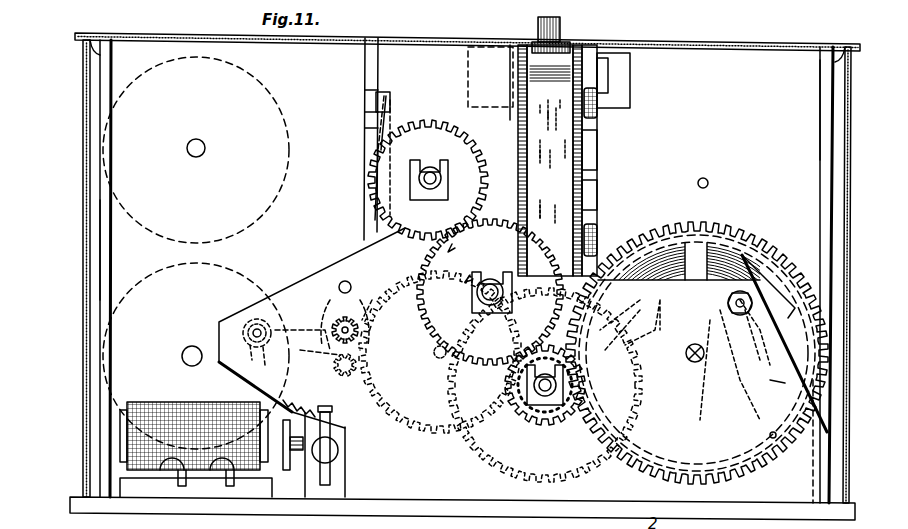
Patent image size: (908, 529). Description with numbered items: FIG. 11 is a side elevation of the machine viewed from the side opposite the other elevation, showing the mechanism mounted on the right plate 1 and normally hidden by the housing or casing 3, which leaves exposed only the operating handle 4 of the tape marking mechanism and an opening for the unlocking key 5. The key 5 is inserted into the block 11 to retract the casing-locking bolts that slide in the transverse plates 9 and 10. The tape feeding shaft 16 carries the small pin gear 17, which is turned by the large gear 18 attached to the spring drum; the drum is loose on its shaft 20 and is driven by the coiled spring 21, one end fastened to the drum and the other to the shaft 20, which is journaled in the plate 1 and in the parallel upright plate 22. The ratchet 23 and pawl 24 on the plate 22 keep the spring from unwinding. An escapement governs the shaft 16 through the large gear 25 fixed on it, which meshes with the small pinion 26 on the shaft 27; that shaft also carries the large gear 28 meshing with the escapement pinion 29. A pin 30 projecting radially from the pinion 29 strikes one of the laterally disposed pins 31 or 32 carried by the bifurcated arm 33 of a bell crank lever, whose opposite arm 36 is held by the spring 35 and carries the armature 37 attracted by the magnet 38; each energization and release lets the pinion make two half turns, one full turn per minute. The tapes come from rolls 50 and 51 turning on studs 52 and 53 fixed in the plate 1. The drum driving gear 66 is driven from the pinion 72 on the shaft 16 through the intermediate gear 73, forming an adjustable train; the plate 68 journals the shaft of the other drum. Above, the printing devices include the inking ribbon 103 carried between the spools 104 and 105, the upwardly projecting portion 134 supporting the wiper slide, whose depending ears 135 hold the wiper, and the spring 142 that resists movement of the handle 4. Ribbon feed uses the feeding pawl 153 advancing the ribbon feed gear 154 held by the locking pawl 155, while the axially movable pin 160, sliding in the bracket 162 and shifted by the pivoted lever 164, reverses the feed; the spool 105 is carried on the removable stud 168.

The right plate 1 is at (812, 138).
The housing or casing 3 is at (375, 37).
The operating handle 4 is at (560, 28).
The unlocking key 5 is at (338, 452).
The transverse plate 9 is at (820, 113).
The transverse plate 10 is at (108, 250).
The block 11 is at (340, 483).
The tape feeding shaft 16 is at (578, 378).
The small pin gear 17 is at (548, 420).
The large gear 18 is at (668, 236).
The drum shaft 20 is at (697, 362).
The coiled spring 21 is at (748, 295).
The parallel upright plate 22 is at (785, 383).
The ratchet 23 is at (668, 310).
The pawl 24 is at (784, 343).
The large gear 25 is at (492, 455).
The small pinion 26 is at (440, 352).
The shaft 27 is at (434, 350).
The large gear 28 is at (440, 432).
The escapement pinion 29 is at (375, 296).
The pin 30 is at (330, 358).
The pin 31 is at (343, 372).
The pin 32 is at (348, 280).
The bifurcated arm 33 is at (289, 318).
The spring 35 is at (333, 374).
The arm 36 is at (248, 376).
The armature 37 is at (288, 470).
The magnet 38 is at (148, 398).
The roll 50 is at (268, 85).
The roll 51 is at (236, 280).
The stud 52 is at (200, 143).
The stud 53 is at (188, 346).
The driving gear 66 is at (462, 133).
The plate 68 is at (707, 179).
The pinion 72 is at (528, 415).
The intermediate gear 73 is at (428, 256).
The inking ribbon 103 is at (598, 165).
The spool 104 is at (598, 137).
The spool 105 is at (598, 205).
The upwardly projecting portion 134 is at (605, 53).
The depending ears 135 is at (608, 68).
The spring 142 is at (530, 42).
The feeding pawl 153 is at (528, 130).
The ribbon feed gear 154 is at (526, 160).
The locking pawl 155 is at (572, 185).
The axially movable pin 160 is at (376, 102).
The bracket 162 is at (364, 152).
The pivoted lever 164 is at (388, 123).
The removable stud 168 is at (600, 118).